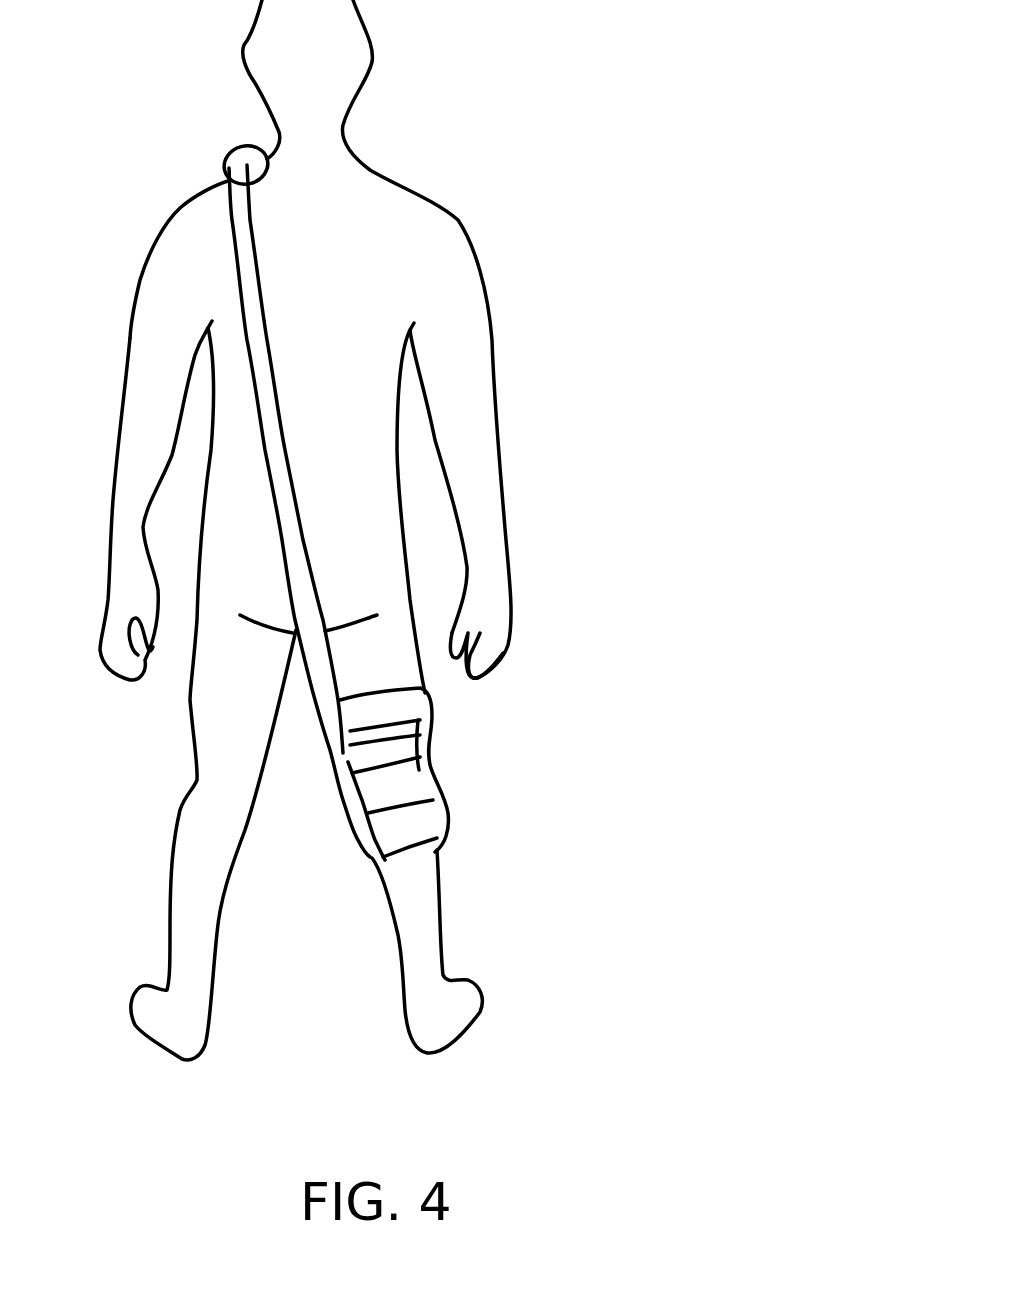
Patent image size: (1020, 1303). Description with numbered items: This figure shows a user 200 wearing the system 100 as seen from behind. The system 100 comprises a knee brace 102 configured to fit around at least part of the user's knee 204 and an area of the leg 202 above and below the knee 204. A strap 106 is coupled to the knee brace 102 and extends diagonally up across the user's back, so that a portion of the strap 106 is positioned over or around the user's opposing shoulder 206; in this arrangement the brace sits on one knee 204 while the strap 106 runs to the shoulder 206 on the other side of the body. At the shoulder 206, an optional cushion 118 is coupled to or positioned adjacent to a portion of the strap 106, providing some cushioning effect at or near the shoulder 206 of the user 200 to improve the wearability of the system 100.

The system 100 is at (480, 802).
The knee brace 102 is at (413, 830).
The strap 106 is at (291, 553).
The cushion 118 is at (242, 160).
The user 200 is at (505, 235).
The leg 202 is at (380, 653).
The knee 204 is at (404, 748).
The shoulder 206 is at (207, 203).